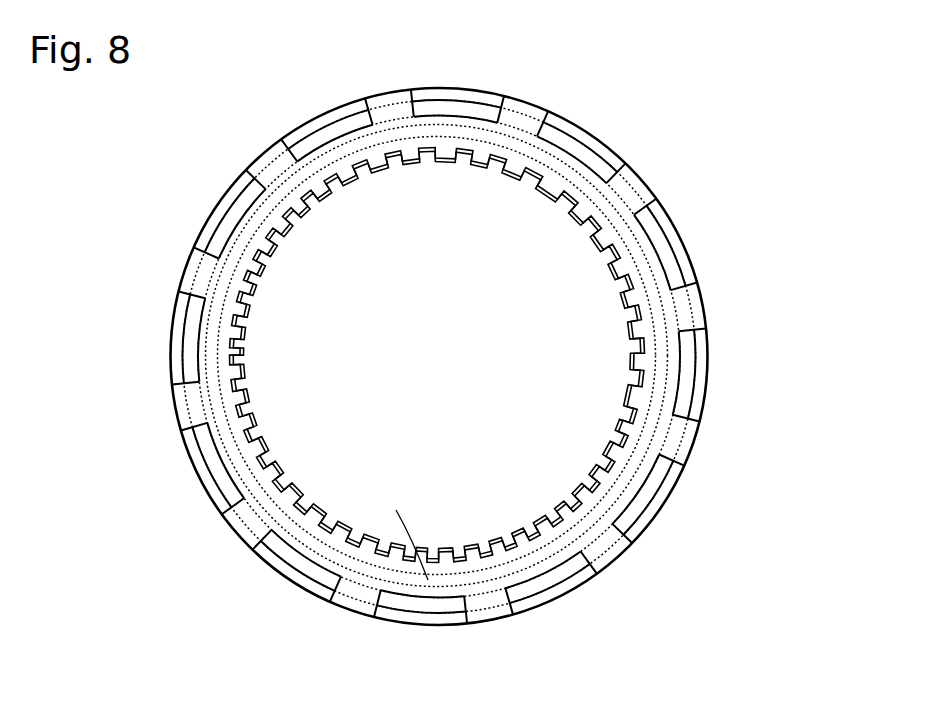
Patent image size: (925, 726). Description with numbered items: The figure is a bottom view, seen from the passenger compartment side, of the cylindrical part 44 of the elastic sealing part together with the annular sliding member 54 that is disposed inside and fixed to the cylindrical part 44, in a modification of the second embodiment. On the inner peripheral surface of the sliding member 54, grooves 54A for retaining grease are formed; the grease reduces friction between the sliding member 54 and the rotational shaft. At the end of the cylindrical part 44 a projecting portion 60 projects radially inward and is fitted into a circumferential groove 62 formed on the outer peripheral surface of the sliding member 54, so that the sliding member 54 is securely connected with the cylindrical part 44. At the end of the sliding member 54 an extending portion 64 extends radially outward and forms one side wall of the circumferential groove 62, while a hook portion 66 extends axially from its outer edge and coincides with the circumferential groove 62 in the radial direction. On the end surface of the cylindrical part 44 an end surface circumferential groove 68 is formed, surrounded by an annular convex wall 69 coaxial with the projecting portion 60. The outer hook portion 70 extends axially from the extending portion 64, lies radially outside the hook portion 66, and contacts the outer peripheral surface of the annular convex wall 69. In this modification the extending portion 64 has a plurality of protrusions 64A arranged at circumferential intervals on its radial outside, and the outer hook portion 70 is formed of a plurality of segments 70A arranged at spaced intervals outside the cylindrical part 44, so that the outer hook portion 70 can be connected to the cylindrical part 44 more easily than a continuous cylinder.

The cylindrical part 44 is at (228, 186).
The sliding member 54 is at (386, 356).
The grooves 54A is at (540, 177).
The projecting portion 60 is at (648, 395).
The circumferential groove 62 is at (247, 290).
The extending portion 64 is at (421, 335).
The protrusions 64A is at (374, 117).
The hook portion 66 is at (548, 138).
The end surface circumferential groove 68 is at (193, 401).
The annular convex wall 69 is at (205, 241).
The outer hook portion 70 is at (517, 351).
The segments 70A is at (432, 95).